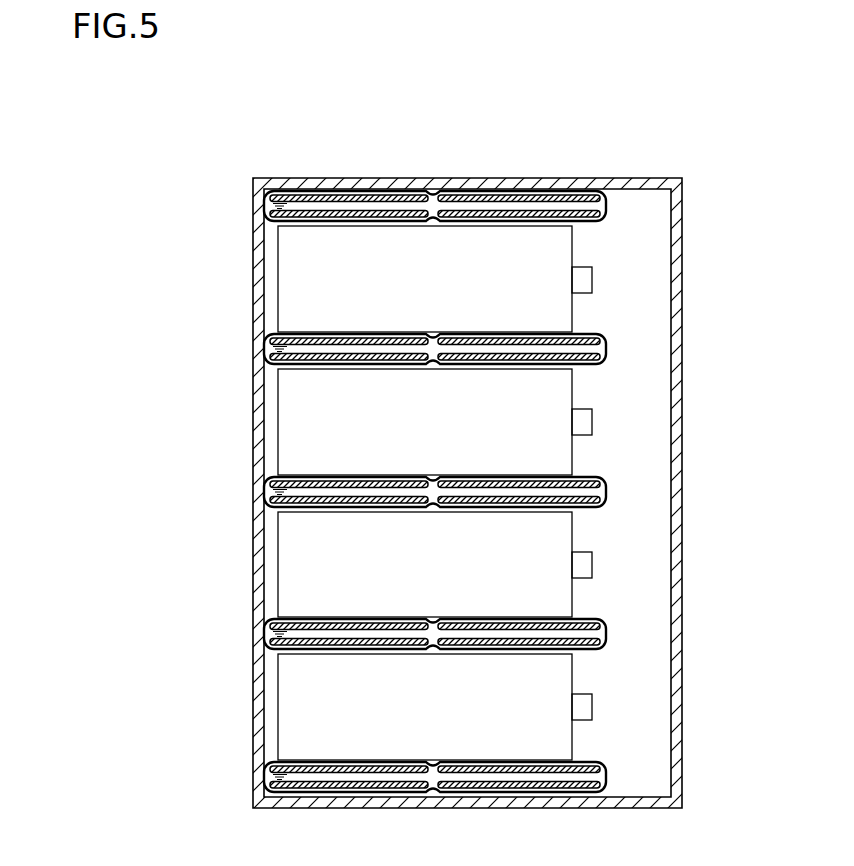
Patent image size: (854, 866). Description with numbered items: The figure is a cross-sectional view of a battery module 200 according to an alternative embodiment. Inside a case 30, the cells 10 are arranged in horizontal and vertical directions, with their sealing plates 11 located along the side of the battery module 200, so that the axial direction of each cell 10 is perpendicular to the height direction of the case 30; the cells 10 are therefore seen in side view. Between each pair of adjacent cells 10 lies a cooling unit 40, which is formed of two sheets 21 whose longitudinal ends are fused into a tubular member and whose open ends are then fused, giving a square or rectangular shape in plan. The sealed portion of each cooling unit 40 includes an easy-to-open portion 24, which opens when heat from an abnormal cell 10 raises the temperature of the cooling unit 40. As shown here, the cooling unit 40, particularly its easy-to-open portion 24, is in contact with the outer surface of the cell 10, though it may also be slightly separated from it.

The battery module 200 is at (660, 111).
The cell 10 is at (303, 273).
The sealing plate 11 is at (592, 279).
The sheet 21 is at (333, 199).
The easy-to-open portion 24 is at (439, 179).
The case 30 is at (678, 750).
The cooling unit 40 is at (498, 458).